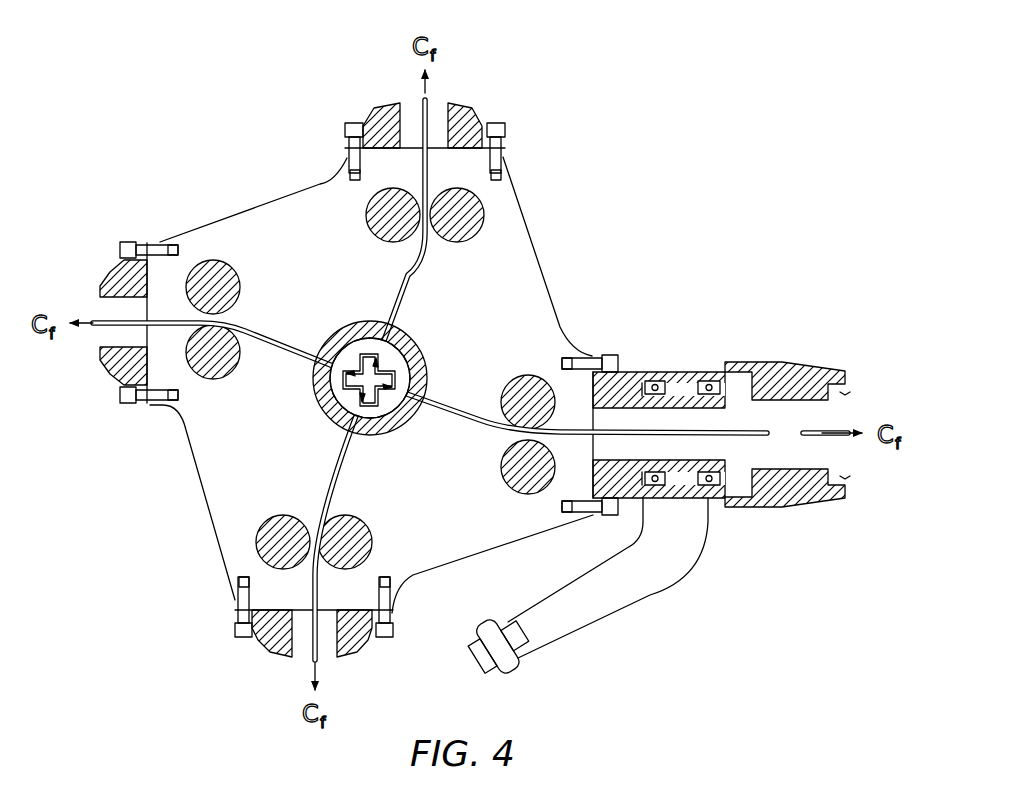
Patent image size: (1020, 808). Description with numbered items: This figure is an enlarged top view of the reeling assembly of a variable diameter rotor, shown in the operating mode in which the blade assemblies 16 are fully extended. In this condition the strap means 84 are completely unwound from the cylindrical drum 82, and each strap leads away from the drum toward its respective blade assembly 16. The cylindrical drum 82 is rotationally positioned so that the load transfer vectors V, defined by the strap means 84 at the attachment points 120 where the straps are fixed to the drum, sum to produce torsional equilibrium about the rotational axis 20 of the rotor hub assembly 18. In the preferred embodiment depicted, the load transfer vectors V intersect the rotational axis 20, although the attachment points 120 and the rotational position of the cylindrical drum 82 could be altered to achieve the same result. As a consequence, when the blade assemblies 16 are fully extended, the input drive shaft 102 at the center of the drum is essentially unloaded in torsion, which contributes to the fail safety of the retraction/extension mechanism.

The blade assemblies 16 is at (800, 438).
The rotor hub assembly 18 is at (472, 537).
The rotational axis 20 is at (418, 351).
The cylindrical drum 82 is at (410, 424).
The strap means 84 is at (264, 330).
The input drive shaft 102 is at (348, 388).
The attachment points 120 is at (390, 327).
The load transfer vectors V is at (326, 347).